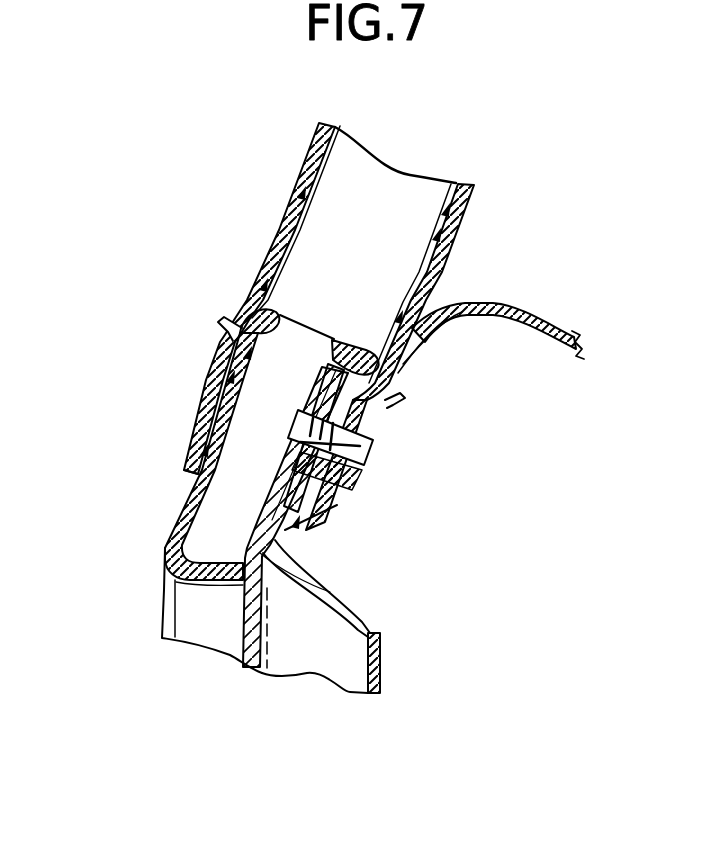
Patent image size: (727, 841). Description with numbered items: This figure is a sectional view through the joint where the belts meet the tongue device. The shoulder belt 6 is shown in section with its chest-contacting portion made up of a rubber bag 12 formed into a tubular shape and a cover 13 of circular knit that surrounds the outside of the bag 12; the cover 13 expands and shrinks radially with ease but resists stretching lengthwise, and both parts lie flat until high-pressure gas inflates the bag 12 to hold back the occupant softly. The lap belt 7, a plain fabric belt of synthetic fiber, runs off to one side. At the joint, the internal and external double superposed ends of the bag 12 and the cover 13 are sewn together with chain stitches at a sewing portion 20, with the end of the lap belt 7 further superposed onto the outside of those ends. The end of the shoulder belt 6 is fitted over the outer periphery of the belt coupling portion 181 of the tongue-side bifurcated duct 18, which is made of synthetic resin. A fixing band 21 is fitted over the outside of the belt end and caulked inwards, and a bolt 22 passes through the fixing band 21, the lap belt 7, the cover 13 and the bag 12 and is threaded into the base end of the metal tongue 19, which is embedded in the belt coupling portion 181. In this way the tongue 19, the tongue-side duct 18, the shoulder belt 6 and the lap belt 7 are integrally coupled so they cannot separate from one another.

The shoulder belt 6 is at (268, 205).
The lap belt 7 is at (526, 312).
The bag 12 is at (296, 262).
The cover 13 is at (268, 282).
The tongue-side bifurcated duct 18 is at (369, 596).
The belt coupling portion 181 is at (358, 342).
The tongue 19 is at (243, 612).
The sewing portion 20 is at (197, 452).
The fixing band 21 is at (216, 376).
The bolt 22 is at (365, 433).